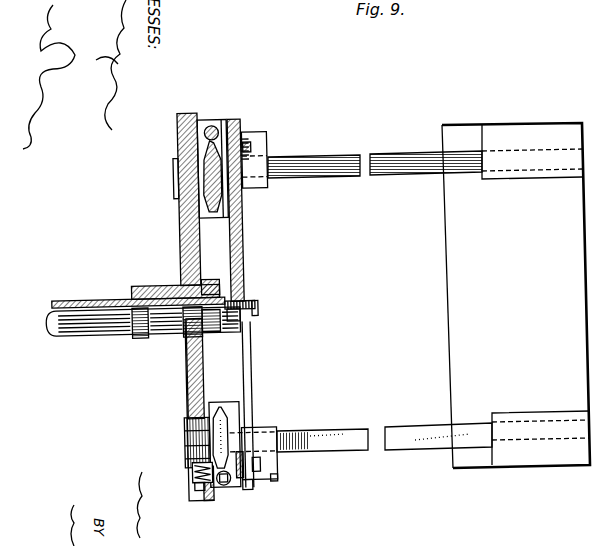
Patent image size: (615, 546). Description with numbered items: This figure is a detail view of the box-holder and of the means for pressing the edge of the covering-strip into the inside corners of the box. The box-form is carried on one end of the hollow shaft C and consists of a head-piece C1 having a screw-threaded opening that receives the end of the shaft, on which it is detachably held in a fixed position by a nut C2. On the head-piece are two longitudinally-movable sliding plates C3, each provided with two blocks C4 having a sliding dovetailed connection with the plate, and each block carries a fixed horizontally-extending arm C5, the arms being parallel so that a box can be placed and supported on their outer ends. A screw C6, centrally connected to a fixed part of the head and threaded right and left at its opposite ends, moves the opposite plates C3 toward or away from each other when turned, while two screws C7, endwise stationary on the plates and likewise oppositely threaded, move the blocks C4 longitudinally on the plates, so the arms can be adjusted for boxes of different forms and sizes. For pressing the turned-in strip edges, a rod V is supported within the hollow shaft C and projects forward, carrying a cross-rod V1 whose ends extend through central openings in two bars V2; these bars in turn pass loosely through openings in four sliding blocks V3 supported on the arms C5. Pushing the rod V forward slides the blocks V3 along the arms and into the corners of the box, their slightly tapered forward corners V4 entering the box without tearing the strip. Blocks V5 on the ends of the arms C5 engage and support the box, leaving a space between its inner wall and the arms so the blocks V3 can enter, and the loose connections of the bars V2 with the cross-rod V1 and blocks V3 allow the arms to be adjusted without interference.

The hollow shaft C is at (112, 326).
The head-piece C1 is at (178, 240).
The nut C2 is at (220, 283).
The sliding plate C3 is at (173, 180).
The block C4 is at (214, 124).
The arm C5 is at (336, 162).
The screw C6 is at (190, 386).
The screw C7 is at (205, 134).
The rod V is at (56, 324).
The cross-rod V1 is at (253, 364).
The bar V2 is at (251, 149).
The sliding block V3 is at (258, 136).
The forward corner V4 is at (277, 478).
The block V5 is at (516, 295).